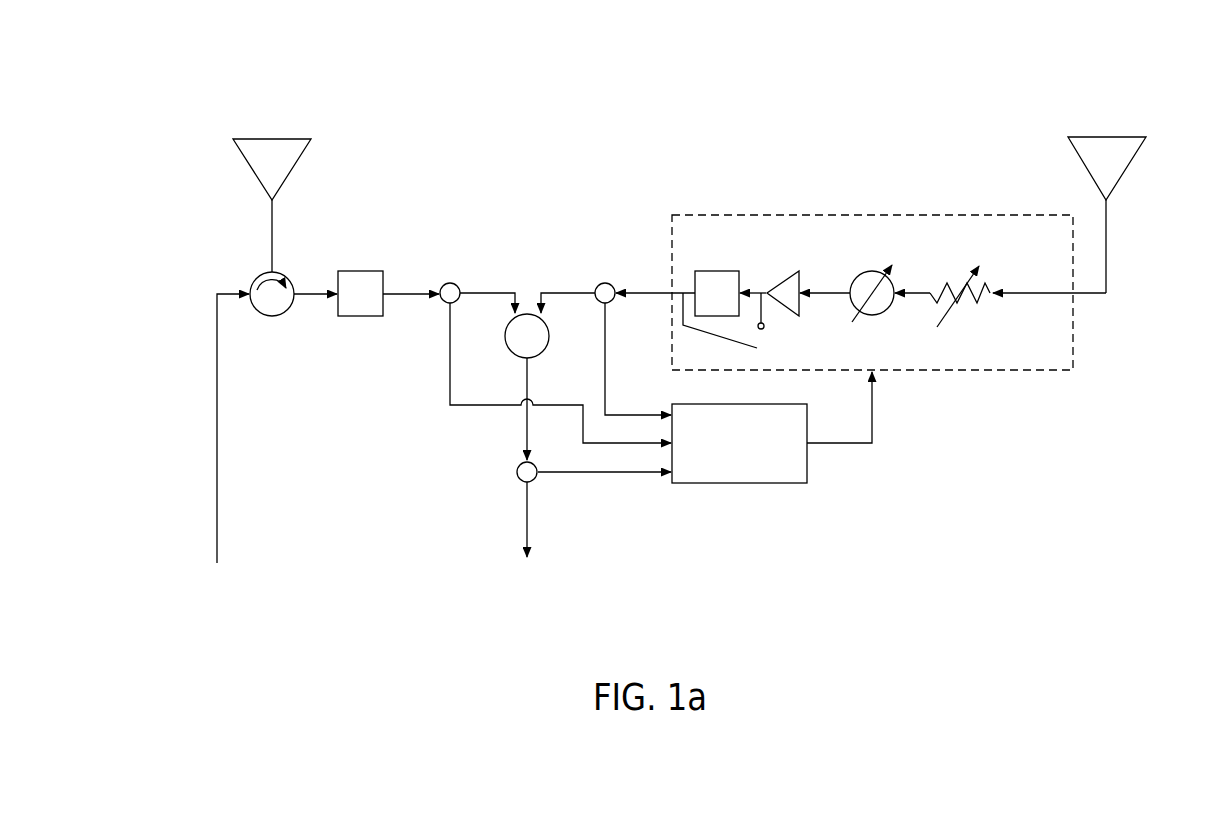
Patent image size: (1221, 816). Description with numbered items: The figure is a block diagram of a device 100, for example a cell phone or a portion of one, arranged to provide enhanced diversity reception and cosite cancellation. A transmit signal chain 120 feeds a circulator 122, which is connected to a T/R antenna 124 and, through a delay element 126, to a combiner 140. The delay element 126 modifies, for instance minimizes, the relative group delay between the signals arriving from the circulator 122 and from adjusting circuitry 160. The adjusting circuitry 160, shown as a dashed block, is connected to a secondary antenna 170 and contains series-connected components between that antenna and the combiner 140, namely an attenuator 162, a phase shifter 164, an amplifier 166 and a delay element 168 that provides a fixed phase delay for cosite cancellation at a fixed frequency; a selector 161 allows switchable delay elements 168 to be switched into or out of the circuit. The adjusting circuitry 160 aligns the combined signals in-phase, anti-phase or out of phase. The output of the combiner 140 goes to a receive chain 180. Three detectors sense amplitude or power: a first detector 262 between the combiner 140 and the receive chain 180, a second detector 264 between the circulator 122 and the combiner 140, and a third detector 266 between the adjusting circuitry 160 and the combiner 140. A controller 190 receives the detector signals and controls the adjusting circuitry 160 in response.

The device 100 is at (302, 68).
The transmit signal chain 120 is at (217, 517).
The circulator 122 is at (268, 315).
The T/R antenna 124 is at (276, 139).
The delay element 126 is at (362, 270).
The combiner 140 is at (540, 355).
The adjusting circuitry 160 is at (832, 213).
The selector 161 is at (725, 342).
The attenuator 162 is at (970, 308).
The phase shifter 164 is at (876, 318).
The amplifier 166 is at (800, 280).
The delay element 168 is at (716, 270).
The secondary antenna 170 is at (1108, 137).
The receive chain 180 is at (528, 517).
The controller 190 is at (740, 483).
The first detector 262 is at (516, 467).
The second detector 264 is at (455, 282).
The third detector 266 is at (609, 282).